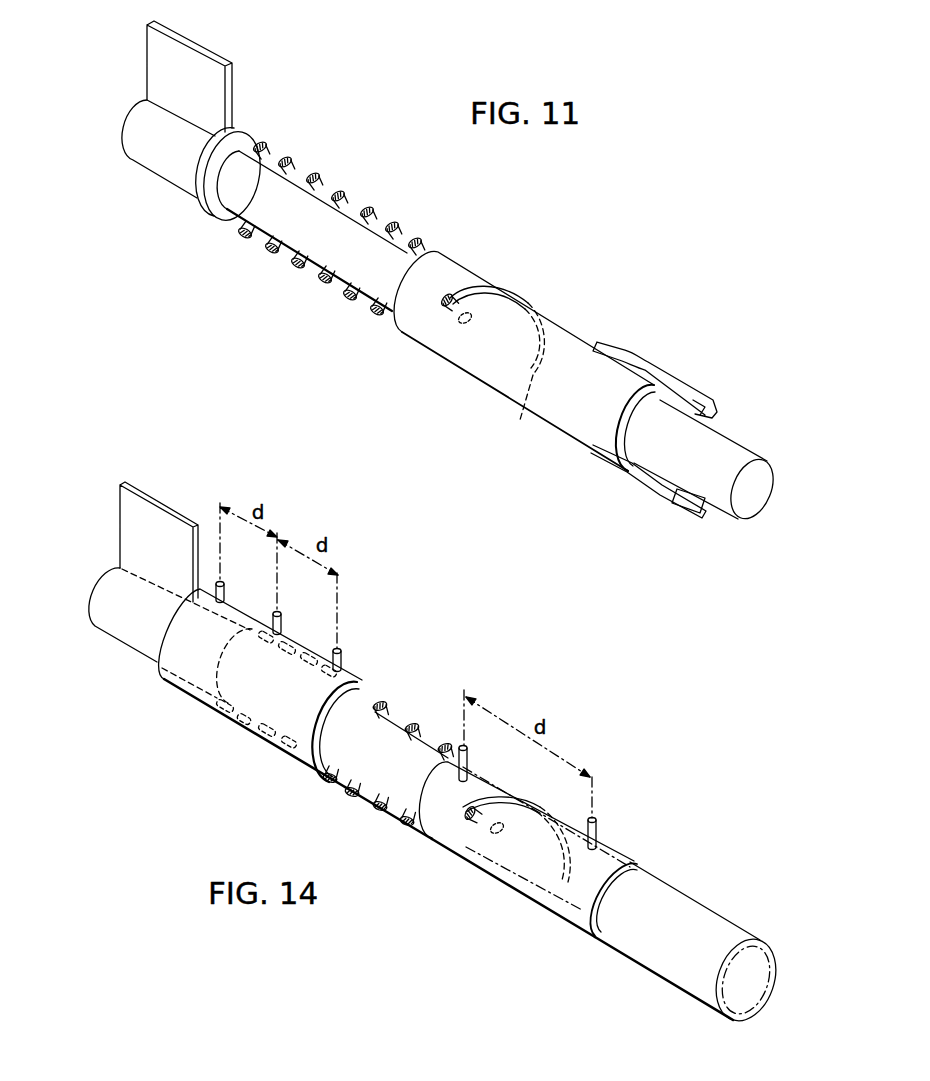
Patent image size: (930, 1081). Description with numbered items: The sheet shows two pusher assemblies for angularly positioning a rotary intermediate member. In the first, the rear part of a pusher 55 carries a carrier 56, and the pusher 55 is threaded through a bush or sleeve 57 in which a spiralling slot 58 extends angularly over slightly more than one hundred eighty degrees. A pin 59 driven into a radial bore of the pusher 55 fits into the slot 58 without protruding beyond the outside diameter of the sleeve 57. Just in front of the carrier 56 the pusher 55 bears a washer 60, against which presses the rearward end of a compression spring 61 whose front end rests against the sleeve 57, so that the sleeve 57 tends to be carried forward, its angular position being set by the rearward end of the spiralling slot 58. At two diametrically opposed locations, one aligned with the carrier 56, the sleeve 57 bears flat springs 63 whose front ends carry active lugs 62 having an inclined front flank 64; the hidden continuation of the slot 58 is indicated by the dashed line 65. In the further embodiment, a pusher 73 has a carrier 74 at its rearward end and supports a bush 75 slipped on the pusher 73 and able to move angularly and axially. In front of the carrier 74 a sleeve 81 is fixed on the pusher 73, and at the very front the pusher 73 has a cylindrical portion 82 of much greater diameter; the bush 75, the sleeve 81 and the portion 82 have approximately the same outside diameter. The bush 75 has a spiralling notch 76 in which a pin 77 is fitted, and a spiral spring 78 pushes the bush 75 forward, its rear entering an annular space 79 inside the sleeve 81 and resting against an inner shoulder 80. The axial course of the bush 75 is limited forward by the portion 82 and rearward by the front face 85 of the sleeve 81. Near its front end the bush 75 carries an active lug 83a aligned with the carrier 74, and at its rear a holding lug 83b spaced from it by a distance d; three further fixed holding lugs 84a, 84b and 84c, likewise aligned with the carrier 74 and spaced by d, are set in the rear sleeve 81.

In FIG. 11, the pusher 55 is at (165, 152).
In FIG. 11, the carrier 56 is at (207, 68).
In FIG. 11, the sleeve 57 is at (488, 353).
In FIG. 11, the spiralling slot 58 is at (468, 292).
In FIG. 11, the pin 59 is at (445, 306).
In FIG. 11, the washer 60 is at (235, 140).
In FIG. 11, the compression spring 61 is at (393, 223).
In FIG. 11, the active lug 62 is at (690, 513).
In FIG. 11, the flat spring 63 is at (633, 462).
In FIG. 11, the inclined front flank 64 is at (697, 513).
In FIG. 11, the hidden strap end 65 is at (522, 411).
In FIG. 14, the pusher 73 is at (126, 615).
In FIG. 14, the carrier 74 is at (131, 538).
In FIG. 14, the bush 75 is at (483, 845).
In FIG. 14, the spiralling notch 76 is at (514, 800).
In FIG. 14, the pin 77 is at (460, 818).
In FIG. 14, the spiral spring 78 is at (413, 723).
In FIG. 14, the annular space 79 is at (250, 727).
In FIG. 14, the inner shoulder 80 is at (227, 697).
In FIG. 14, the sleeve 81 is at (170, 680).
In FIG. 14, the cylindrical portion 82 is at (710, 915).
In FIG. 14, the active lug 83a is at (598, 831).
In FIG. 14, the holding lug 83b is at (472, 760).
In FIG. 14, the fixed holding lug 84a is at (343, 663).
In FIG. 14, the fixed holding lug 84b is at (282, 624).
In FIG. 14, the fixed holding lug 84c is at (223, 590).
In FIG. 14, the front face 85 is at (313, 773).